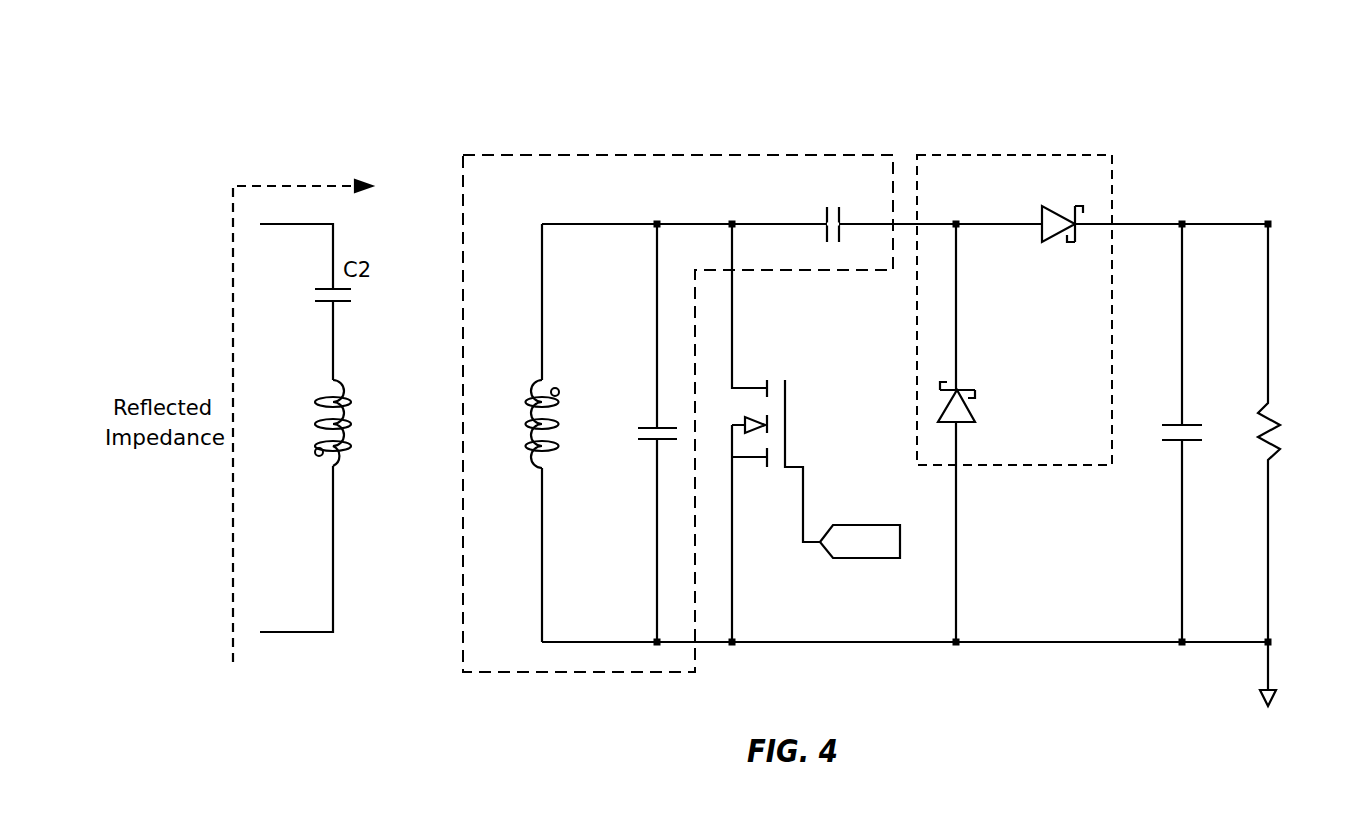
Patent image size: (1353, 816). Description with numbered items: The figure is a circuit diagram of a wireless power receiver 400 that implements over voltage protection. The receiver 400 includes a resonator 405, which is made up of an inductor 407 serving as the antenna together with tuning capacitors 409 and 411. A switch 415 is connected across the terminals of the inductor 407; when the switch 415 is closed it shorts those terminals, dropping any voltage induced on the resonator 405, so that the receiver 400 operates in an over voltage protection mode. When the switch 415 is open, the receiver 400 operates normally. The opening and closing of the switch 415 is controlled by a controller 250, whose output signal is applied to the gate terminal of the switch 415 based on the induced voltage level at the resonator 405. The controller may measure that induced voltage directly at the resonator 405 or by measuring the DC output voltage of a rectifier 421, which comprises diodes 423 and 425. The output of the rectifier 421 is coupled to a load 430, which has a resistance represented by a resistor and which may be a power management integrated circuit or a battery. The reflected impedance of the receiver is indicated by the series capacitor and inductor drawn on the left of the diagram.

The wireless power receiver 400 is at (728, 62).
The resonator 405 is at (838, 155).
The inductor 407 is at (541, 378).
The tuning capacitor 409 is at (826, 238).
The tuning capacitor 411 is at (648, 440).
The switch 415 is at (751, 460).
The rectifier 421 is at (1056, 155).
The diode 423 is at (963, 425).
The diode 425 is at (1042, 207).
The load 430 is at (1272, 405).
The controller 250 is at (865, 525).